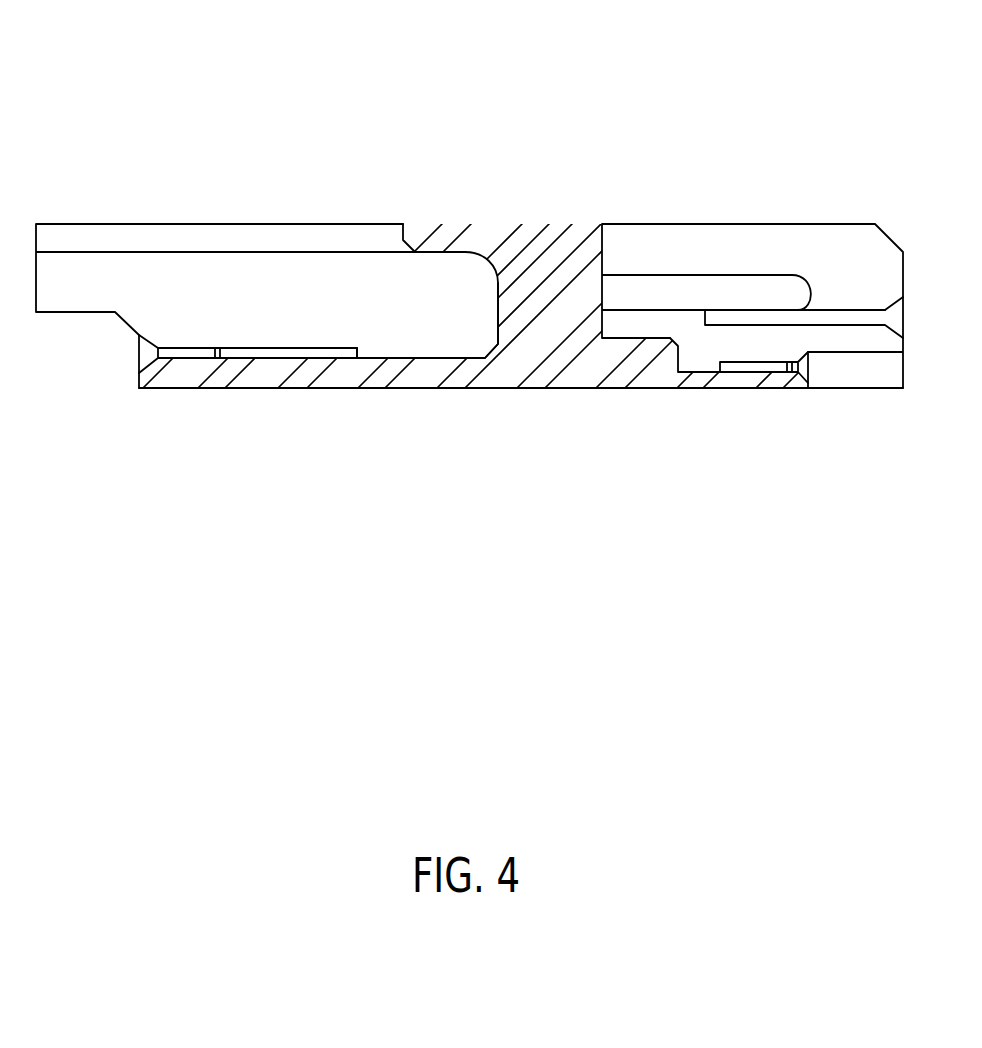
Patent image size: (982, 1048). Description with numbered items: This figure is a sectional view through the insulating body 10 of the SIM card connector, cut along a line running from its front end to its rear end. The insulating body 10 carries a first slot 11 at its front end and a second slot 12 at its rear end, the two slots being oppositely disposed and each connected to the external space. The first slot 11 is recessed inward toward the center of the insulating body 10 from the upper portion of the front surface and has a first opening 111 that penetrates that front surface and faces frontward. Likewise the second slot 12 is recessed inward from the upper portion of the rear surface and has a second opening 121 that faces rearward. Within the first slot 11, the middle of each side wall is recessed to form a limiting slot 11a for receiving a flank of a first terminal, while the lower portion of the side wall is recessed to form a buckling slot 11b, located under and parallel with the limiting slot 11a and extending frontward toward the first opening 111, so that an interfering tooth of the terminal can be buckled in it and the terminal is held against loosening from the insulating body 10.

The insulating body 10 is at (73, 38).
The first slot 11 is at (768, 235).
The limiting slot 11a is at (797, 318).
The buckling slot 11b is at (747, 367).
The first opening 111 is at (692, 360).
The second slot 12 is at (223, 267).
The second opening 121 is at (385, 352).